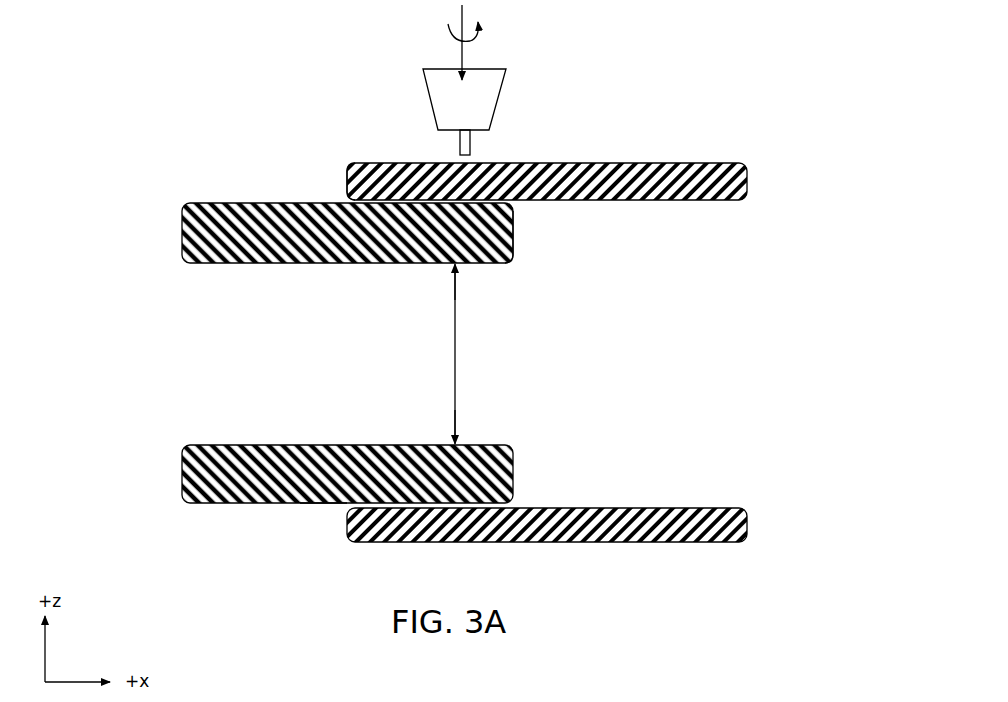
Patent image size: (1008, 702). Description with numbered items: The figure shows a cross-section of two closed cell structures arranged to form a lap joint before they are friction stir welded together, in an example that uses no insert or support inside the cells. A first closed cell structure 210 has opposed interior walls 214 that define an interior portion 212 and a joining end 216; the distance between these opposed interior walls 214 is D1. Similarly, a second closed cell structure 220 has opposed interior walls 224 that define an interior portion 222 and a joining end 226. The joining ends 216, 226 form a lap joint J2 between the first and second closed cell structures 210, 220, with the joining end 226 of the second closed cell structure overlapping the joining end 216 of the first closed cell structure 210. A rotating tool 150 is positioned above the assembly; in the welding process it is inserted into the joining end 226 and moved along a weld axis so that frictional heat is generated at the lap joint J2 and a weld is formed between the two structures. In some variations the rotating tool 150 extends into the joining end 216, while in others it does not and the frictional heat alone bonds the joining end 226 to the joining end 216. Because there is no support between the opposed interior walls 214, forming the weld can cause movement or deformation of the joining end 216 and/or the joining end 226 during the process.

The rotating tool 150 is at (532, 72).
The first closed cell structure 210 is at (266, 197).
The interior portion 212 is at (208, 353).
The opposed interior walls 214 is at (218, 205).
The joining end 216 is at (484, 265).
The second closed cell structure 220 is at (693, 162).
The interior portion 222 is at (723, 357).
The opposed interior walls 224 is at (581, 163).
The joining end 226 is at (383, 160).
The distance between opposed interior walls D1 is at (435, 354).
The lap joint J2 is at (319, 530).